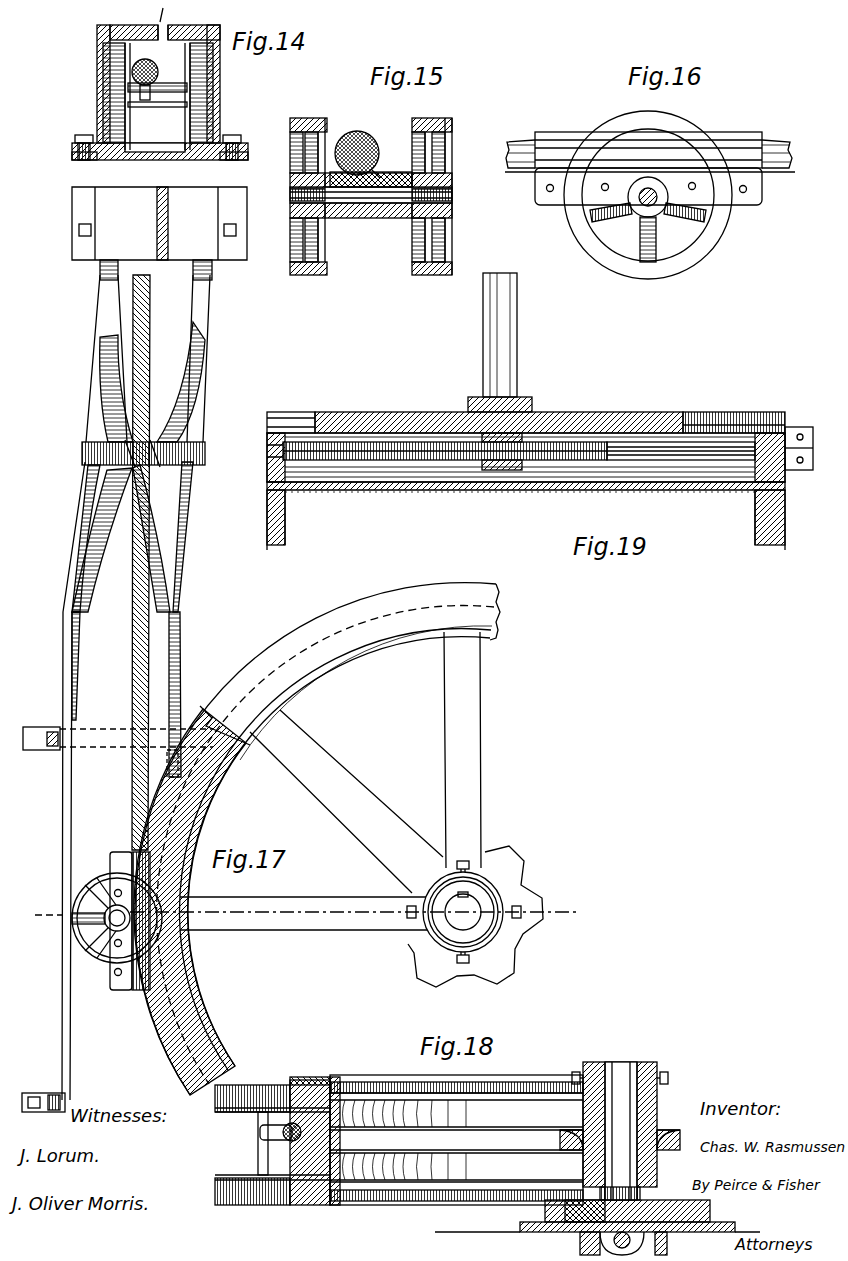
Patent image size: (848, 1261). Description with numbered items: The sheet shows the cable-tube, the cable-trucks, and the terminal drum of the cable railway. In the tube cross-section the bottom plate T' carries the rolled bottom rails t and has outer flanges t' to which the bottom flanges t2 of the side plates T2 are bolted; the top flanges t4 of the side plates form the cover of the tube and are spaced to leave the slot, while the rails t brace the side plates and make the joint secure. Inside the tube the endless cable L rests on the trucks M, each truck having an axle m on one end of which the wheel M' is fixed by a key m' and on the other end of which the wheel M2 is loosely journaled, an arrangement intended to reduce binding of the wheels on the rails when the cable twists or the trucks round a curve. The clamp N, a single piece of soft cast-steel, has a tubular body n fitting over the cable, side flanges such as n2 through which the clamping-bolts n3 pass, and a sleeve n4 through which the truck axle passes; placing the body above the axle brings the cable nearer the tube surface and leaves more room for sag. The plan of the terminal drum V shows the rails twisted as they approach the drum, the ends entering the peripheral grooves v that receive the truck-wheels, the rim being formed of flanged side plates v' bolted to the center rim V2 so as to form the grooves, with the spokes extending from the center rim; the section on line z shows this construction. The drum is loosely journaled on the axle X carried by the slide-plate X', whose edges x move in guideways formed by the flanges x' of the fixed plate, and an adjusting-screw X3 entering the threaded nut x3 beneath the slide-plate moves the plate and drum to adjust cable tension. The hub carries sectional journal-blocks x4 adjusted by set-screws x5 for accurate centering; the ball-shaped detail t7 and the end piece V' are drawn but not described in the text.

In FIG. 14, the side plates T2 is at (97, 95).
In FIG. 14, the bottom plate T' is at (160, 163).
In FIG. 14, the bottom flanges t2 is at (75, 142).
In FIG. 14, the outer flanges t' is at (158, 463).
In FIG. 14, the bottom rails t is at (137, 571).
In FIG. 14, the ball pivot t7 is at (135, 40).
In FIG. 14, the top flanges t4 is at (145, 12).
In FIG. 14, the endless cable L is at (131, 562).
In FIG. 16, the endless cable L is at (794, 150).
In FIG. 14, the flanged side plates v' is at (117, 894).
In FIG. 18, the flanged side plates v' is at (266, 1144).
In FIG. 17, the terminal drum V is at (339, 839).
In FIG. 17, the center rim V2 is at (180, 985).
In FIG. 17, the section line z is at (297, 914).
In FIG. 15, the wheel M' is at (307, 182).
In FIG. 15, the wheel M2 is at (452, 130).
In FIG. 15, the trucks M is at (368, 210).
In FIG. 16, the trucks M is at (648, 137).
In FIG. 15, the axle m is at (357, 193).
In FIG. 15, the key m' is at (293, 179).
In FIG. 15, the right journal m'' is at (448, 184).
In FIG. 15, the clamp N is at (362, 135).
In FIG. 15, the sleeve n4 is at (385, 172).
In FIG. 16, the sleeve n4 is at (640, 208).
In FIG. 16, the tubular body n is at (700, 151).
In FIG. 16, the side flange n2 is at (648, 186).
In FIG. 16, the clamping-bolts n3 is at (550, 195).
In FIG. 19, the axle X is at (514, 342).
In FIG. 18, the axle X is at (620, 1113).
In FIG. 19, the slide-plate X' is at (526, 463).
In FIG. 19, the adjusting-screw X3 is at (700, 425).
In FIG. 18, the adjusting-screw X3 is at (610, 1250).
In FIG. 19, the threaded nut x3 is at (522, 482).
In FIG. 18, the drum V' is at (436, 1122).
In FIG. 18, the peripheral grooves v is at (285, 1137).
In FIG. 18, the flanges x' is at (506, 1135).
In FIG. 18, the sectional journal-blocks x4 is at (618, 1062).
In FIG. 18, the set-screws x5 is at (576, 1072).
In FIG. 18, the edges x is at (576, 1193).